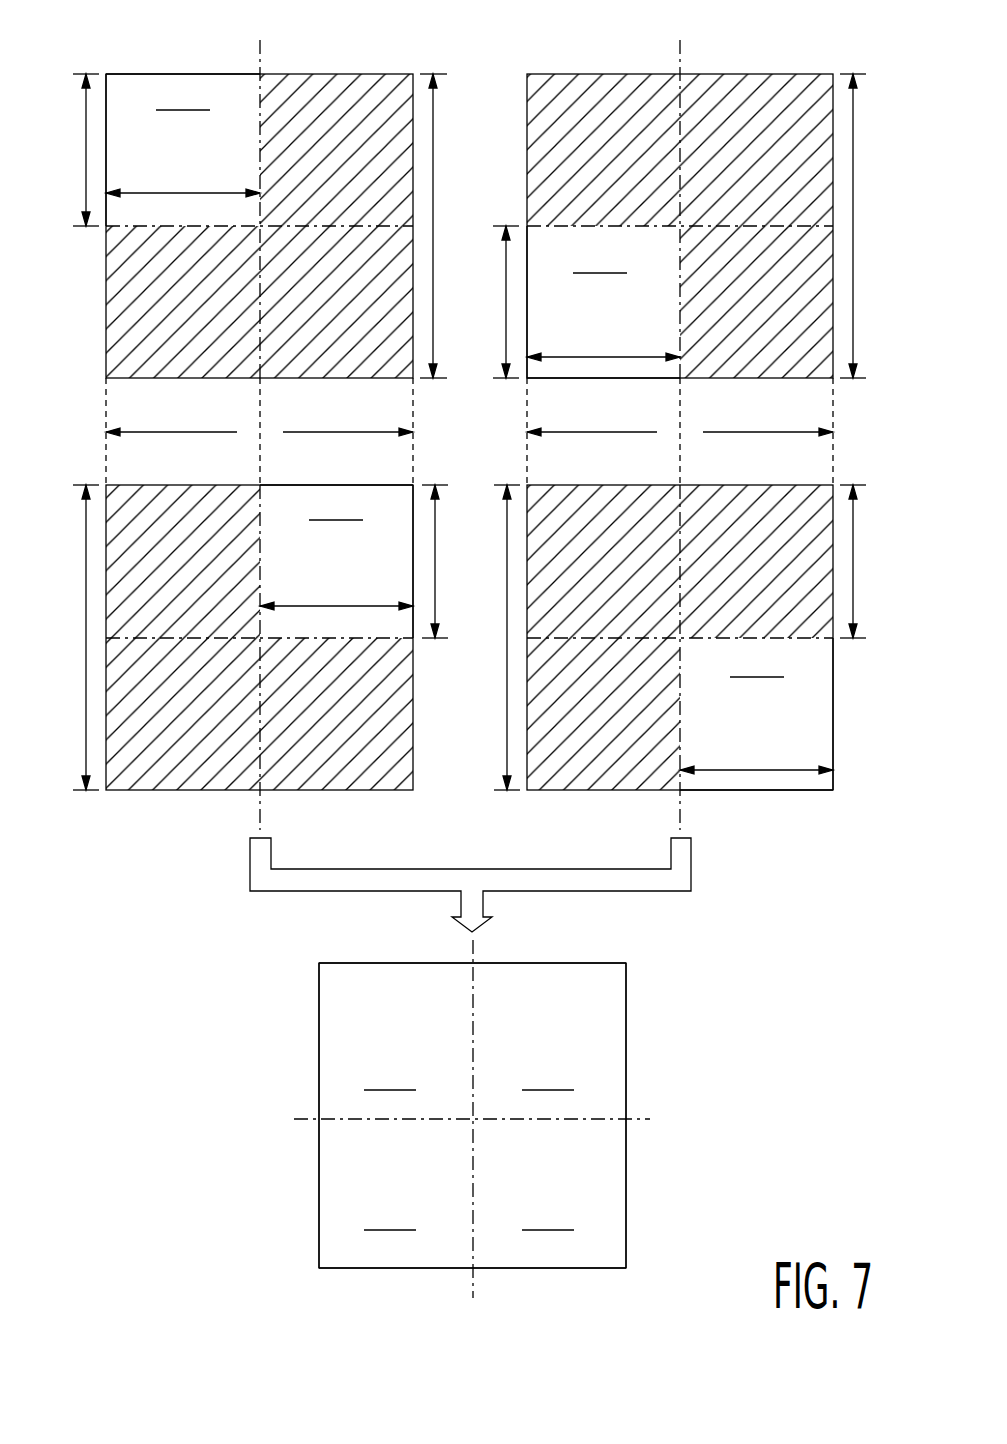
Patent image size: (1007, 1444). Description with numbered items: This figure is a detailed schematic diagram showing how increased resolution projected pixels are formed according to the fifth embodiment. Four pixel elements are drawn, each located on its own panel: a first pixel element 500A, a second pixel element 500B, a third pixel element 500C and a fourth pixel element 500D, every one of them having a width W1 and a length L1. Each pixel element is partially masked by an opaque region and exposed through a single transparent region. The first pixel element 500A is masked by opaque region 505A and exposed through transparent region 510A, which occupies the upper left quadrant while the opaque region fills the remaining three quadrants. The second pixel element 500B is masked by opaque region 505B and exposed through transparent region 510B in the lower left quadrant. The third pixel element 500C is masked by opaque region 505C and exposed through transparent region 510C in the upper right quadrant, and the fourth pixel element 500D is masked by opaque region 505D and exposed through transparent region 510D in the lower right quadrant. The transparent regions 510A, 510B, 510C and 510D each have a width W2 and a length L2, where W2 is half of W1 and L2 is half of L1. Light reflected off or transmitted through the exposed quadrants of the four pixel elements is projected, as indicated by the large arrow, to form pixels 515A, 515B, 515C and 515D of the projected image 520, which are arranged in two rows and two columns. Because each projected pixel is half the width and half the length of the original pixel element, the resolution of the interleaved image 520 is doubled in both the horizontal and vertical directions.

The first pixel element 500A is at (102, 309).
The second pixel element 500B is at (520, 108).
The third pixel element 500C is at (422, 777).
The fourth pixel element 500D is at (840, 768).
The opaque region 505A is at (370, 86).
The opaque region 505B is at (785, 88).
The opaque region 505C is at (197, 775).
The opaque region 505D is at (632, 780).
The transparent region 510A is at (183, 150).
The transparent region 510B is at (603, 302).
The transparent region 510C is at (336, 561).
The transparent region 510D is at (756, 714).
The pixel 515A is at (396, 1041).
The pixel 515B is at (549, 1041).
The pixel 515C is at (396, 1193).
The pixel 515D is at (549, 1193).
The projected image 520 is at (634, 1167).